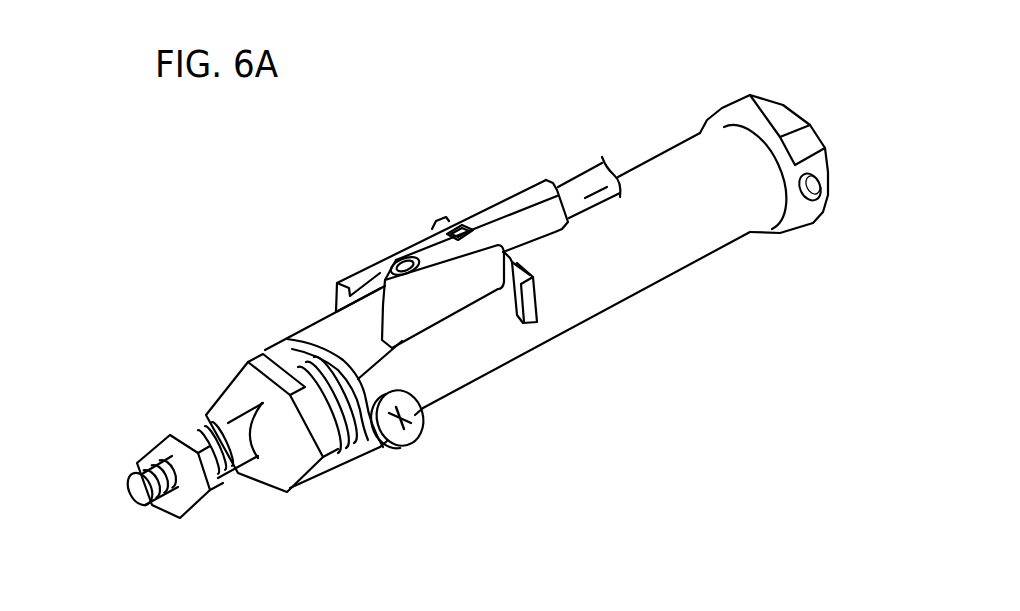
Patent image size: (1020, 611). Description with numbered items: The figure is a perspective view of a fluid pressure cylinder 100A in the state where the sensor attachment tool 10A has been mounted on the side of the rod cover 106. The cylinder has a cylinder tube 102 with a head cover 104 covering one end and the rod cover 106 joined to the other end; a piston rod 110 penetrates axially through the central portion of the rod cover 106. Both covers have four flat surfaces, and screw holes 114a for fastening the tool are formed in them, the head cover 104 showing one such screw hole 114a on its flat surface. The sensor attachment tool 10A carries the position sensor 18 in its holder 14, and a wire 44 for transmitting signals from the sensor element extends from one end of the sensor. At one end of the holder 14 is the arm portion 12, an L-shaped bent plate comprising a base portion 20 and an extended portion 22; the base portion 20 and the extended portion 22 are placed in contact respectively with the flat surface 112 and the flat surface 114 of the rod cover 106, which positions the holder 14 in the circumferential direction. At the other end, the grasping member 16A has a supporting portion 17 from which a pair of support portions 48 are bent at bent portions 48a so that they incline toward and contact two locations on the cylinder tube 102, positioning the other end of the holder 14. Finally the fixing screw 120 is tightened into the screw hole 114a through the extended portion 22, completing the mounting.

The fluid pressure cylinder 100A is at (657, 110).
The cylinder tube 102 is at (683, 250).
The head cover 104 is at (760, 112).
The screw hole 114a is at (807, 195).
The arm portion 12 is at (296, 320).
The base portion 20 is at (327, 328).
The extended portion 22 is at (393, 380).
The flat surface 114 is at (377, 447).
The rod cover 106 is at (353, 460).
The fixing screw 120 is at (418, 432).
The flat surface 112 is at (265, 348).
The piston rod 110 is at (200, 433).
The sensor attachment tool 10A is at (398, 221).
The holder 14 is at (370, 268).
The position sensor 18 is at (507, 208).
The wire 44 is at (590, 178).
The grasping member 16A is at (557, 265).
The supporting portion 17 is at (512, 262).
The support portion 48 is at (525, 293).
The bent portion 48a is at (512, 282).